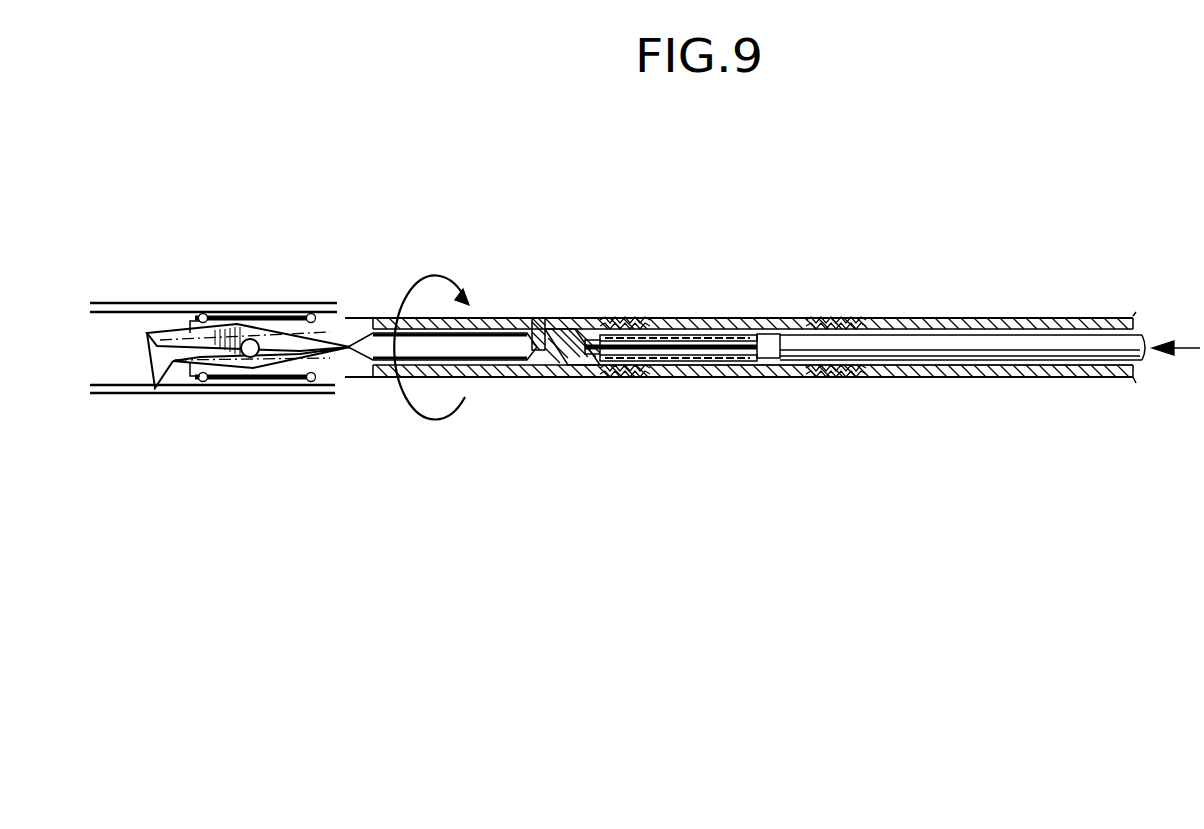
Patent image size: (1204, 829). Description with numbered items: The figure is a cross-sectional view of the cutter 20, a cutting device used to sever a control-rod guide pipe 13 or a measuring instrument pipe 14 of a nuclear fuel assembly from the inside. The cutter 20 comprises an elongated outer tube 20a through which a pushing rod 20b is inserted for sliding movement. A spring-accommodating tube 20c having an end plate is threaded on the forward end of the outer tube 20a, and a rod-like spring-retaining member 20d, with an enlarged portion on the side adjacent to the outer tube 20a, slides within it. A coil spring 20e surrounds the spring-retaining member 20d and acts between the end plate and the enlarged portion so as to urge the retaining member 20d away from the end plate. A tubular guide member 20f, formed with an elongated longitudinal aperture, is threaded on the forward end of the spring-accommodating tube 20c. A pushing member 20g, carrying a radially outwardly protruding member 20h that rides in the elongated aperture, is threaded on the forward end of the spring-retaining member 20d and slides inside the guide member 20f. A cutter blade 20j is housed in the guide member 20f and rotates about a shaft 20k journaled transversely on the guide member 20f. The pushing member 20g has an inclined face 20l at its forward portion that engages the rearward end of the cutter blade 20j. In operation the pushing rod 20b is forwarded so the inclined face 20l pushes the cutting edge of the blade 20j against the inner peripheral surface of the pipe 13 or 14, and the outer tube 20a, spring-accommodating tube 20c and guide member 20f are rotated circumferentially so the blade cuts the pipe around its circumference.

The control-rod guide pipe 13 is at (113, 303).
The measuring instrument pipe 14 is at (212, 389).
The cutter 20 is at (475, 318).
The outer tube 20a is at (1002, 318).
The pushing rod 20b is at (902, 347).
The spring-accommodating tube 20c is at (715, 378).
The spring-retaining member 20d is at (702, 318).
The coil spring 20e is at (618, 318).
The tubular guide member 20f is at (285, 305).
The pushing member 20g is at (500, 357).
The protruding member 20h is at (537, 318).
The cutter blade 20j is at (233, 362).
The shaft 20k is at (248, 339).
The inclined face 20l is at (362, 318).